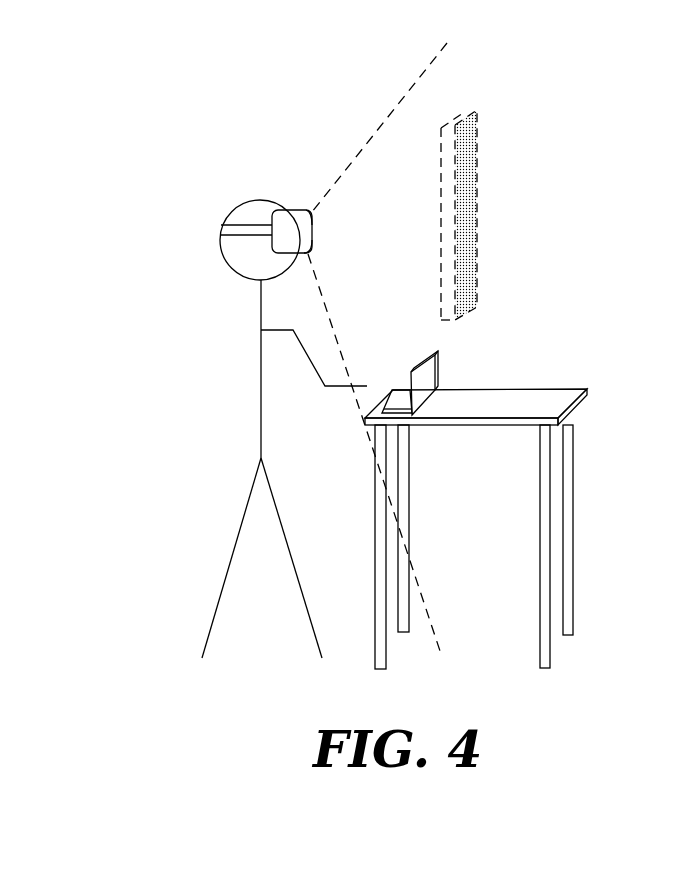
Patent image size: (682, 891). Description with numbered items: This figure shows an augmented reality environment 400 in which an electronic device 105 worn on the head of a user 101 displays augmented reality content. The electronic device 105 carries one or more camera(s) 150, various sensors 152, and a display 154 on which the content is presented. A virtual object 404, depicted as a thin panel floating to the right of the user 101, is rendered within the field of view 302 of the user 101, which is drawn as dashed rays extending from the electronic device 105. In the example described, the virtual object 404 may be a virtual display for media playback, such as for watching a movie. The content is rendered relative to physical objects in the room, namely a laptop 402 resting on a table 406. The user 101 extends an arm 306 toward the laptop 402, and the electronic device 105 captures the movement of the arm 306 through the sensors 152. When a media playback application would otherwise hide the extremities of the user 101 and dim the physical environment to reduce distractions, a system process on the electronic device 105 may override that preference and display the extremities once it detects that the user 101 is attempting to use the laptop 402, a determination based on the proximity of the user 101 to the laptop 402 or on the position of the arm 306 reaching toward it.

The augmented reality environment 400 is at (98, 30).
The user 101 is at (260, 410).
The electronic device 105 is at (293, 208).
The camera(s) 150 is at (271, 201).
The sensors 152 is at (313, 218).
The display 154 is at (311, 251).
The field of view 302 is at (372, 125).
The arm 306 is at (330, 388).
The laptop 402 is at (440, 350).
The virtual object 404 is at (478, 152).
The table 406 is at (527, 395).